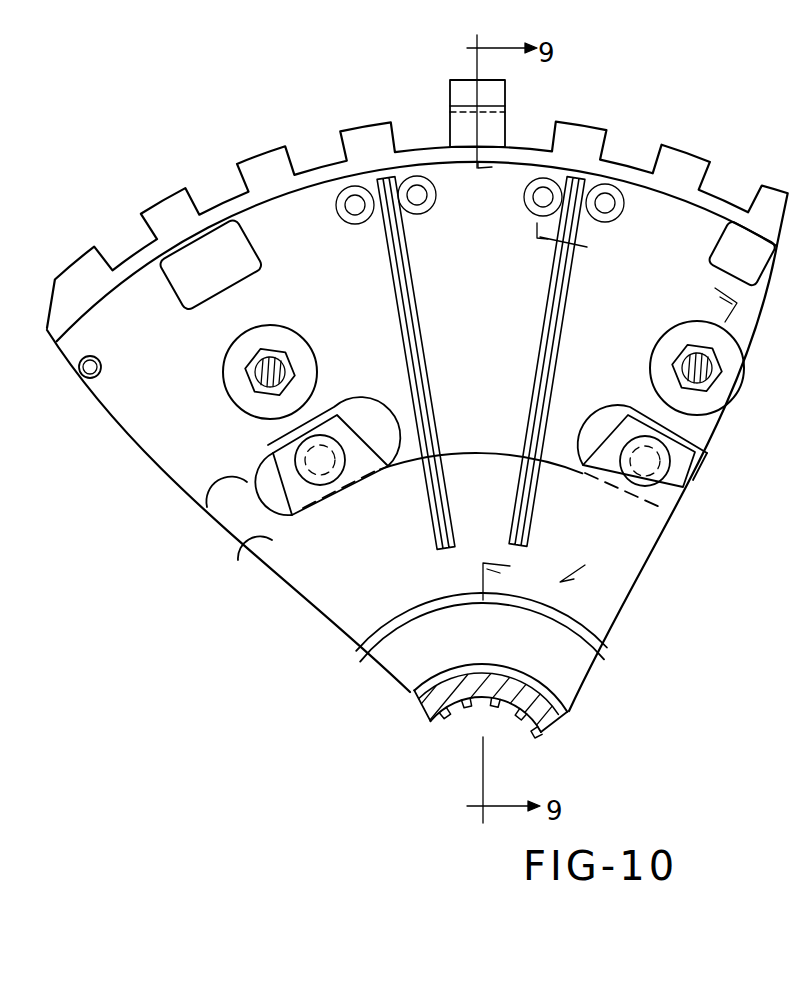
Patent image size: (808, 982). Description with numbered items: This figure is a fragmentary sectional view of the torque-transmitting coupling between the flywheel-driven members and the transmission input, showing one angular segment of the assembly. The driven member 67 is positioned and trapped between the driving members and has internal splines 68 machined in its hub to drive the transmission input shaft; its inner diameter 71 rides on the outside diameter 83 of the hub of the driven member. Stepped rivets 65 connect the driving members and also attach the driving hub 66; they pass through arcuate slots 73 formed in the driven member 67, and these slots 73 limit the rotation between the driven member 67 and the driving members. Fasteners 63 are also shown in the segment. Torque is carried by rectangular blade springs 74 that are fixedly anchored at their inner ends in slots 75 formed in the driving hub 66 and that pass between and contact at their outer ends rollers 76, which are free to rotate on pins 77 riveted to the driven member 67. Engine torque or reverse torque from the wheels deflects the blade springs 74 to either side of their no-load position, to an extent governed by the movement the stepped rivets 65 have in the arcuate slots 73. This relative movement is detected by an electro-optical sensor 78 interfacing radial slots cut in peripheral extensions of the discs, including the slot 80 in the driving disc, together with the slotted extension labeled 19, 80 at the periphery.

The ring gear teeth 19 is at (627, 157).
The slot 80 is at (417, 219).
The fastening bolt 63 is at (283, 362).
The stepped rivet 65 is at (293, 440).
The driving hub 66 is at (243, 542).
The driven member 67 is at (183, 237).
The internal splines 68 is at (523, 710).
The inner diameter 71 is at (418, 708).
The arcuate slot 73 is at (213, 503).
The rectangular blade spring 74 is at (390, 288).
The slot 75 is at (432, 520).
The roller 76 is at (98, 346).
The pin 77 is at (100, 377).
The electro-optical sensor 78 is at (505, 92).
The outside diameter 83 is at (528, 672).